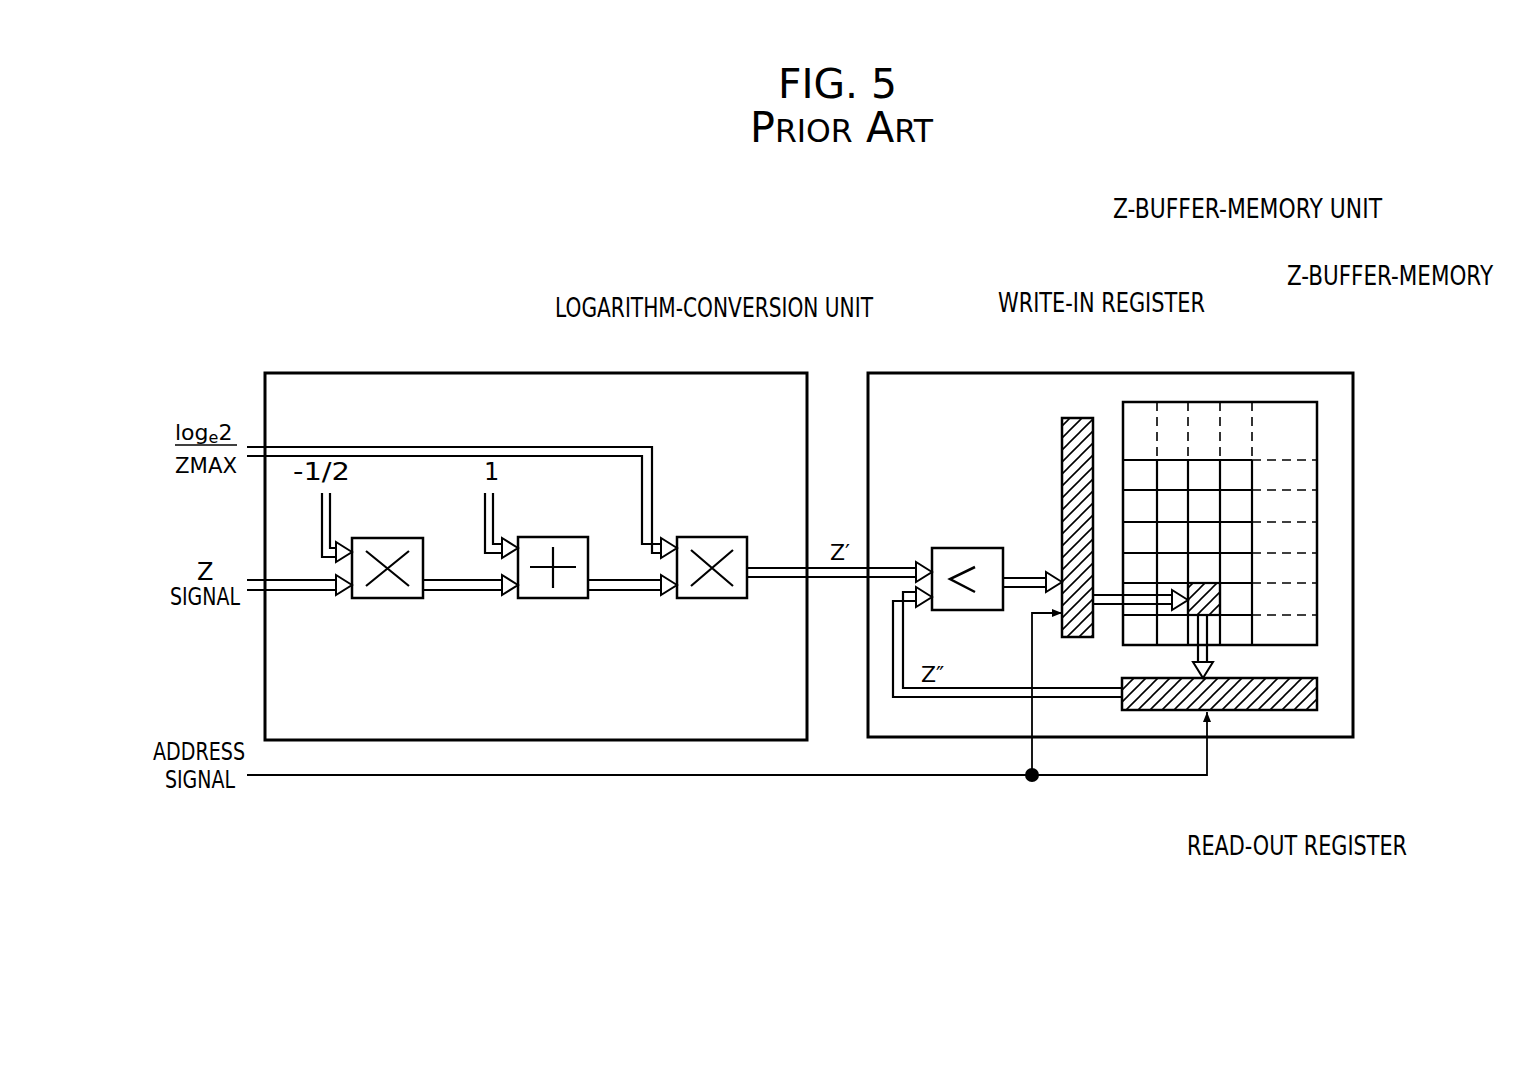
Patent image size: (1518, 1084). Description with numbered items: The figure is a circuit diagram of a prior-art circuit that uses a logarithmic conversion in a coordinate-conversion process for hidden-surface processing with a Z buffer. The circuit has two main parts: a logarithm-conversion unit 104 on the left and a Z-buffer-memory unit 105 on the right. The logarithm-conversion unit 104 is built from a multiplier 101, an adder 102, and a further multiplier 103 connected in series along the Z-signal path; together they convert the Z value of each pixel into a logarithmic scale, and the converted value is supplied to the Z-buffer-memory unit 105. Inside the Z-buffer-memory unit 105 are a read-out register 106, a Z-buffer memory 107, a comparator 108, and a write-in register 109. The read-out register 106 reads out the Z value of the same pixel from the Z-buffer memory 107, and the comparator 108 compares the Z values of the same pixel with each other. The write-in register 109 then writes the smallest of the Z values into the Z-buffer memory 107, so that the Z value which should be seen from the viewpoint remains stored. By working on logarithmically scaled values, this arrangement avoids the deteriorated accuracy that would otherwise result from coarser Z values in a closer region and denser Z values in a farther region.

The multiplier 101 is at (385, 538).
The adder 102 is at (548, 537).
The multiplier 103 is at (710, 537).
The logarithm-conversion unit 104 is at (678, 373).
The Z-buffer-memory unit 105 is at (1260, 373).
The read-out register 106 is at (1265, 712).
The Z-buffer memory 107 is at (1317, 435).
The comparator 108 is at (960, 548).
The write-in register 109 is at (1078, 418).